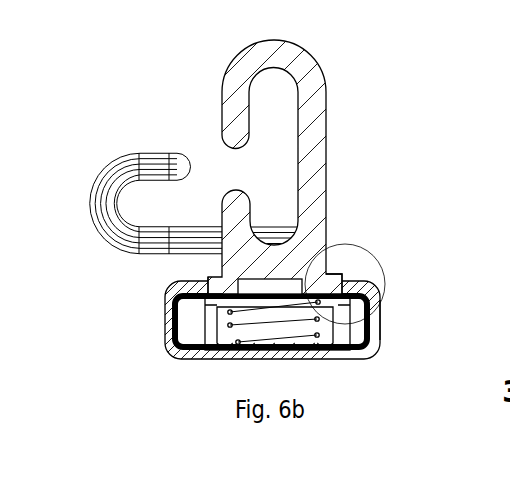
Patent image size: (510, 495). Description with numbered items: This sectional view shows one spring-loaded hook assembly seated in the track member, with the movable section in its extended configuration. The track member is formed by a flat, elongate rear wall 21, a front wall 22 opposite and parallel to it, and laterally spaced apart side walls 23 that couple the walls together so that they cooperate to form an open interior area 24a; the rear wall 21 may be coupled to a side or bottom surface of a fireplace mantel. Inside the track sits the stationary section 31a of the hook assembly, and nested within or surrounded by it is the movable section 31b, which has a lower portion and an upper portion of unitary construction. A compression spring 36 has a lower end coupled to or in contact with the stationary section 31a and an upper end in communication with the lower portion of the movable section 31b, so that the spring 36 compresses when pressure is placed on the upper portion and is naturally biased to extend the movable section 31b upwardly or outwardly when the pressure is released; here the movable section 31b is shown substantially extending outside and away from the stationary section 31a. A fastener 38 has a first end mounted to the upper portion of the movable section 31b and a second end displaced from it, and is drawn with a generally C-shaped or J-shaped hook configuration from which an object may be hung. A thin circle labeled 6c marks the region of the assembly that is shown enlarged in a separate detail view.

The fastener 38 is at (305, 63).
The movable section 31b is at (350, 249).
The detail region 6c is at (371, 253).
The front wall 22 is at (180, 282).
The side walls 23 is at (385, 320).
The open interior area 24a is at (174, 328).
The stationary section 31a is at (185, 350).
The rear wall 21 is at (350, 357).
The compression spring 36 is at (236, 327).